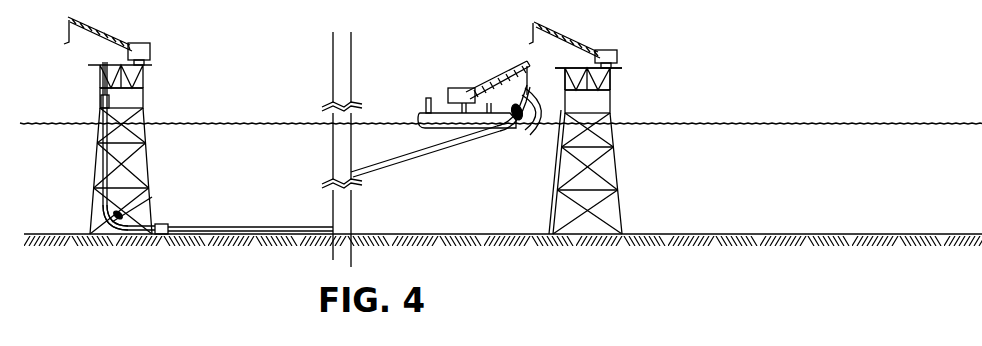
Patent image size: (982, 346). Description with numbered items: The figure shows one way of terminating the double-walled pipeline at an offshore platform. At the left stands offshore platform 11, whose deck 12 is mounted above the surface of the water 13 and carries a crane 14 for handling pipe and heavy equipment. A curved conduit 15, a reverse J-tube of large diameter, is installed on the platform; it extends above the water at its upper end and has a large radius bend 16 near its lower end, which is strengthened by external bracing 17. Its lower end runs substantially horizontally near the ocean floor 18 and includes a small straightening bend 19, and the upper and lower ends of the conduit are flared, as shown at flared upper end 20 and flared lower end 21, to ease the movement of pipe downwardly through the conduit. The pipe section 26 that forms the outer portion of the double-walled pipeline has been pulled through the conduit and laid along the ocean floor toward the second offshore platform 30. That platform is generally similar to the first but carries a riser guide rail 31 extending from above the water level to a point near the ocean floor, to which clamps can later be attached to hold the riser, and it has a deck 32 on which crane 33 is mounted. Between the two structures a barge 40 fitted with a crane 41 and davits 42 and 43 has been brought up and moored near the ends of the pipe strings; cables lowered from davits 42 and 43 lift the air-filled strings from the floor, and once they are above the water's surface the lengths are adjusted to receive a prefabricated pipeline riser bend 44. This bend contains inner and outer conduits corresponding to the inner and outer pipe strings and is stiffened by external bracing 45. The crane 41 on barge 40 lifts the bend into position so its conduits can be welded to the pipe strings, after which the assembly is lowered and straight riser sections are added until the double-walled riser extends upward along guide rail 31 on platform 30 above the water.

The offshore platform 11 is at (149, 151).
The deck 12 is at (153, 68).
The surface of the water 13 is at (232, 126).
The crane 14 is at (88, 27).
The curved conduit 15 is at (100, 163).
The large radius bend 16 is at (100, 216).
The external bracing 17 is at (133, 210).
The ocean floor 18 is at (247, 238).
The small straightening bend 19 is at (160, 220).
The flared upper end 20 is at (100, 105).
The flared lower end 21 is at (166, 236).
The pipe section 26 is at (479, 145).
The second offshore platform 30 is at (617, 168).
The riser guide rail 31 is at (556, 176).
The deck 32 is at (620, 70).
The crane 33 is at (617, 55).
The barge 40 is at (418, 127).
The crane 41 is at (510, 68).
The davit 42 is at (427, 99).
The davit 43 is at (477, 88).
The prefabricated pipeline riser bend 44 is at (543, 125).
The external bracing 45 is at (522, 135).